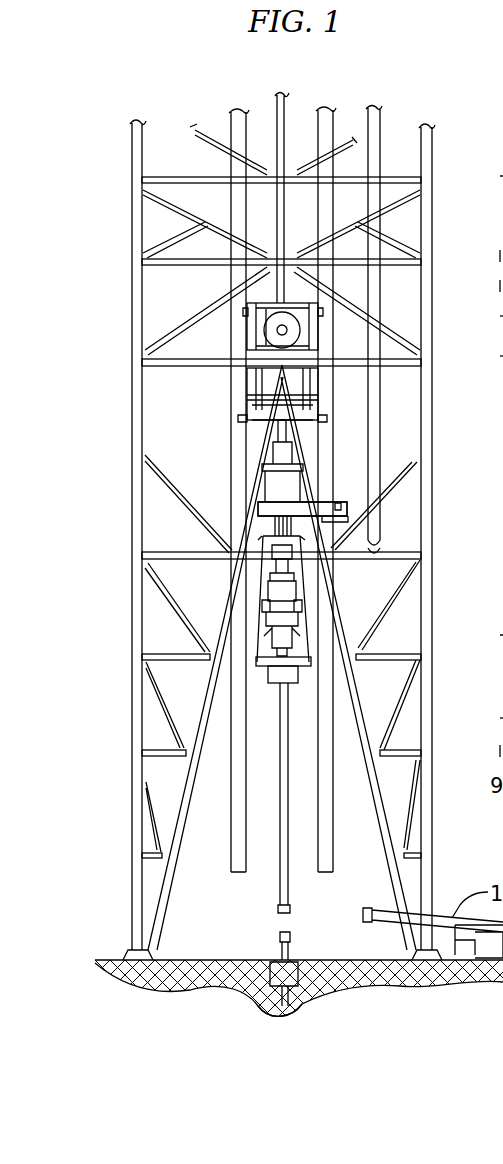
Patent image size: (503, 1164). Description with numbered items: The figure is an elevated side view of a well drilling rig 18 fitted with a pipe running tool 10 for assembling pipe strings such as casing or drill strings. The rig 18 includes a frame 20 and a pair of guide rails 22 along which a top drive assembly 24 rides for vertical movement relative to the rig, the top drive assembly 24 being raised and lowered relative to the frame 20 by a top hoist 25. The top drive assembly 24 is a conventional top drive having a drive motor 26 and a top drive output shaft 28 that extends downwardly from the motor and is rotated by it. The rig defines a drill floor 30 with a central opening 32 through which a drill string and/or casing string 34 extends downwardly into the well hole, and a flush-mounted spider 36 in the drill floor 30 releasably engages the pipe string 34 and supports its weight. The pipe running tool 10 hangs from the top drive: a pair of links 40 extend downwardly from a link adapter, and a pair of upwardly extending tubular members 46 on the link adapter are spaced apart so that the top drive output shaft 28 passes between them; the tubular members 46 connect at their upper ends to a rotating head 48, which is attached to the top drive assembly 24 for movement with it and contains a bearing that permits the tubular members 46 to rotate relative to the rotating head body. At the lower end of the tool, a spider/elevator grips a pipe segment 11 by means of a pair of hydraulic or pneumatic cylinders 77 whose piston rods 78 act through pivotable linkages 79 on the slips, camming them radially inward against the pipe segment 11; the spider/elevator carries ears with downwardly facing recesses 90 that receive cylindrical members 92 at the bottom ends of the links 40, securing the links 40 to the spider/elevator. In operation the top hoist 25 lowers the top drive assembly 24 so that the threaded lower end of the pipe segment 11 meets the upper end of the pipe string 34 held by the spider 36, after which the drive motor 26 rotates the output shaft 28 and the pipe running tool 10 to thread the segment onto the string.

The pipe running tool 10 is at (305, 598).
The pipe segment 11 is at (282, 885).
The well drilling rig 18 is at (233, 540).
The frame 20 is at (132, 222).
The guide rails 22 is at (224, 118).
The top drive assembly 24 is at (312, 345).
The top hoist 25 is at (270, 316).
The drive motor 26 is at (274, 490).
The top drive output shaft 28 is at (270, 538).
The drill floor 30 is at (114, 960).
The central opening 32 is at (300, 960).
The drill string and/or casing string 34 is at (278, 950).
The flush-mounted spider 36 is at (262, 1000).
The links 40 is at (484, 397).
The tubular members 46 is at (274, 523).
The rotating head 48 is at (292, 517).
The hydraulic or pneumatic cylinders 77 is at (486, 358).
The piston rods 78 is at (486, 318).
The pivotable linkages 79 is at (489, 720).
The downwardly facing recesses 90 is at (502, 256).
The cylindrical members 92 is at (502, 286).